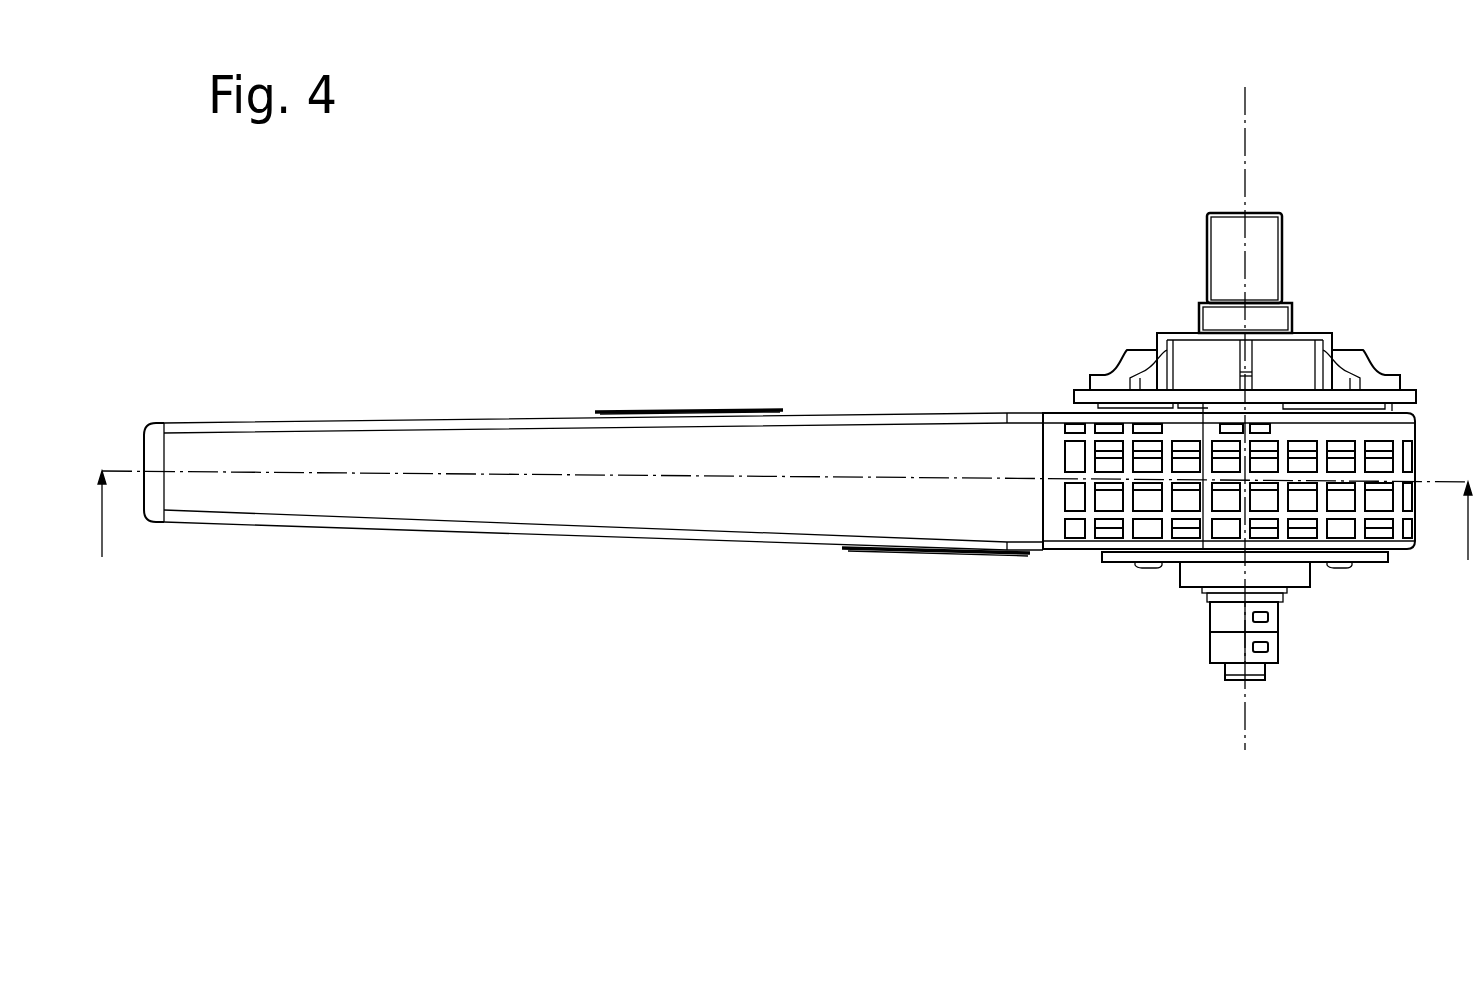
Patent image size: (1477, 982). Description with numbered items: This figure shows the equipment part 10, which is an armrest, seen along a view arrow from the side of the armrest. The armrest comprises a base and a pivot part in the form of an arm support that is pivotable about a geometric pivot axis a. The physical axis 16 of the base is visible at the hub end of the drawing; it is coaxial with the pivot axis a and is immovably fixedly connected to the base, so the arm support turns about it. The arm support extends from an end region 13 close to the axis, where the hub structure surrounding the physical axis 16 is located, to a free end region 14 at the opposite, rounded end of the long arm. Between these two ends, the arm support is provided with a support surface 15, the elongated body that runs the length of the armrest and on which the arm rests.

The equipment part 10 is at (1373, 182).
The end region close to the axis 13 is at (1418, 413).
The free end region 14 is at (160, 421).
The support surface 15 is at (650, 465).
The physical axis 16 is at (1222, 252).
The geometric pivot axis a is at (1245, 148).